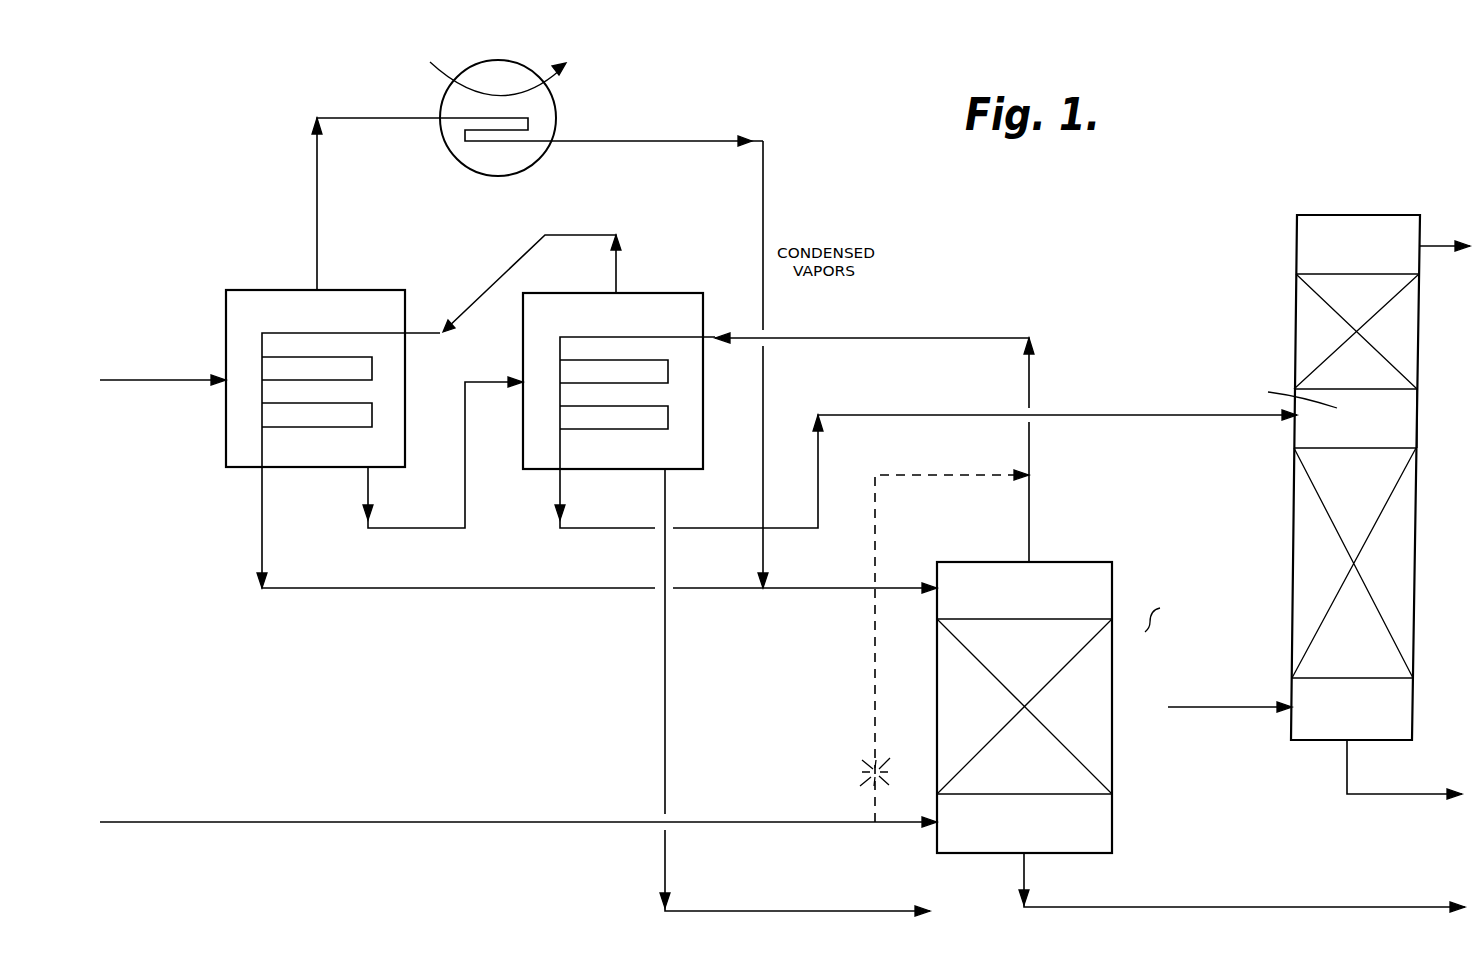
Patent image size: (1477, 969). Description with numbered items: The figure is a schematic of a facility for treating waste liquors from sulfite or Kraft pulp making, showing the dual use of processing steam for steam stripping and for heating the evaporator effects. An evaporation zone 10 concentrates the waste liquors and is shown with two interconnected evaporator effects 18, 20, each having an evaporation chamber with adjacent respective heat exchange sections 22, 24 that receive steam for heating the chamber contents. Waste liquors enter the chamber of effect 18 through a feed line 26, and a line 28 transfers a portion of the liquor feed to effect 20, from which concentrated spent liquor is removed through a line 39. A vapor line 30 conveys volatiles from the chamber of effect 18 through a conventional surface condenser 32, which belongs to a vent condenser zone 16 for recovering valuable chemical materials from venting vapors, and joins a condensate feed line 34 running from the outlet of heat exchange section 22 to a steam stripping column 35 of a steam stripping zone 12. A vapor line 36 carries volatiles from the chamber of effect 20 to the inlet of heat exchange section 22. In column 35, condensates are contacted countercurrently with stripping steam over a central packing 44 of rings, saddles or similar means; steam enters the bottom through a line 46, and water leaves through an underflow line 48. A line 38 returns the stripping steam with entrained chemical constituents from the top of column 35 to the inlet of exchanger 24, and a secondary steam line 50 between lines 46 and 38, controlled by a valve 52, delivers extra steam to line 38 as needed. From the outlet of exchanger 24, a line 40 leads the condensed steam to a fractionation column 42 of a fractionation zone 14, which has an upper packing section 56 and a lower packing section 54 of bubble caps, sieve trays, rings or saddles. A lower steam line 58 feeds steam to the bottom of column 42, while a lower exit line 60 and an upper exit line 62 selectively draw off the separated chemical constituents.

The evaporation zone 10 is at (432, 274).
The steam stripping zone 12 is at (1139, 580).
The fractionation zone 14 is at (1444, 198).
The vent condenser zone 16 is at (517, 44).
The evaporator effect 18 is at (292, 467).
The evaporator effect 20 is at (597, 469).
The heat exchange section 22 is at (305, 333).
The heat exchange section 24 is at (620, 337).
The feed line 26 is at (150, 380).
The line 28 is at (400, 528).
The vapor line 30 is at (317, 198).
The surface condenser 32 is at (553, 92).
The condensate feed line 34 is at (790, 588).
The steam stripping column 35 is at (1116, 677).
The vapor line 36 is at (616, 270).
The line 38 is at (1029, 385).
The line 39 is at (665, 752).
The line 40 is at (913, 415).
The fractionation column 42 is at (1418, 420).
The central packing 44 is at (1050, 685).
The line 46 is at (483, 822).
The underflow line 48 is at (1024, 880).
The secondary steam line 50 is at (875, 650).
The valve 52 is at (870, 780).
The lower packing section 54 is at (1360, 545).
The upper packing section 56 is at (1385, 305).
The lower steam line 58 is at (1197, 707).
The lower exit line 60 is at (1397, 794).
The upper exit line 62 is at (1431, 188).